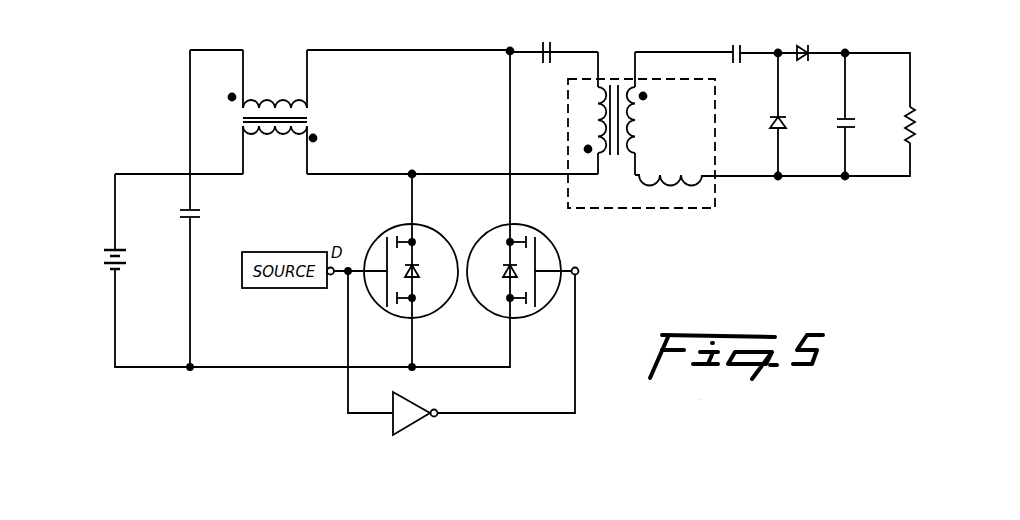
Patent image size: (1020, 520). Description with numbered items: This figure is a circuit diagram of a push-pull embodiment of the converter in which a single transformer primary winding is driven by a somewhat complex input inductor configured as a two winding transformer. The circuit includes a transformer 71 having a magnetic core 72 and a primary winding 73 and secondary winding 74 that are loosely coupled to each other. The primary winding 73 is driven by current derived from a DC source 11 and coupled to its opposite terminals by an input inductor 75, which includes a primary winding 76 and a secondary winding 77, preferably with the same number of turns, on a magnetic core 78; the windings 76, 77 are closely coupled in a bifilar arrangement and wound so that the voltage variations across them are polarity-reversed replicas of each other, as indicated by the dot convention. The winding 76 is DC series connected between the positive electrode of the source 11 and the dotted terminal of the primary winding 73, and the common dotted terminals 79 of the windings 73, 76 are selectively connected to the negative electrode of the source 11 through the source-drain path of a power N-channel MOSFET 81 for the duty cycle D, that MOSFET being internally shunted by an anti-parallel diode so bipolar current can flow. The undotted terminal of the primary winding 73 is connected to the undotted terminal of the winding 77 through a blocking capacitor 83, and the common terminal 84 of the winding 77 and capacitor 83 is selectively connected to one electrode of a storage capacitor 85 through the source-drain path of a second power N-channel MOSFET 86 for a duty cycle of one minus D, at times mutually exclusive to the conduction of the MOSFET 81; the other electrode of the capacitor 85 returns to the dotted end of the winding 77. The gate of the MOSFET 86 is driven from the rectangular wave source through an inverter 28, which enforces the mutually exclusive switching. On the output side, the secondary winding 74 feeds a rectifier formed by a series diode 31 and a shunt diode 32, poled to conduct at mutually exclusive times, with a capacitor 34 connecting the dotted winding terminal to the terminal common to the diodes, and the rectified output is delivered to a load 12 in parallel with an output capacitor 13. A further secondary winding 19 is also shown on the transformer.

The DC source 11 is at (126, 270).
The load 12 is at (913, 116).
The capacitor 13 is at (836, 129).
The auxiliary secondary winding 19 is at (667, 178).
The inverter 28 is at (412, 419).
The series diode 31 is at (808, 61).
The shunt diode 32 is at (772, 127).
The capacitor 34 is at (738, 67).
The transformer 71 is at (627, 114).
The magnetic core 72 is at (615, 80).
The primary winding 73 is at (597, 124).
The secondary winding 74 is at (637, 110).
The input inductor 75 is at (295, 115).
The primary winding 76 is at (292, 131).
The secondary winding 77 is at (285, 103).
The magnetic core 78 is at (242, 119).
The common dotted terminals 79 is at (409, 171).
The power N-channel MOSFET 81 is at (378, 241).
The blocking capacitor 83 is at (545, 67).
The common terminal 84 is at (507, 54).
The storage capacitor 85 is at (178, 212).
The power N-channel MOSFET 86 is at (548, 251).